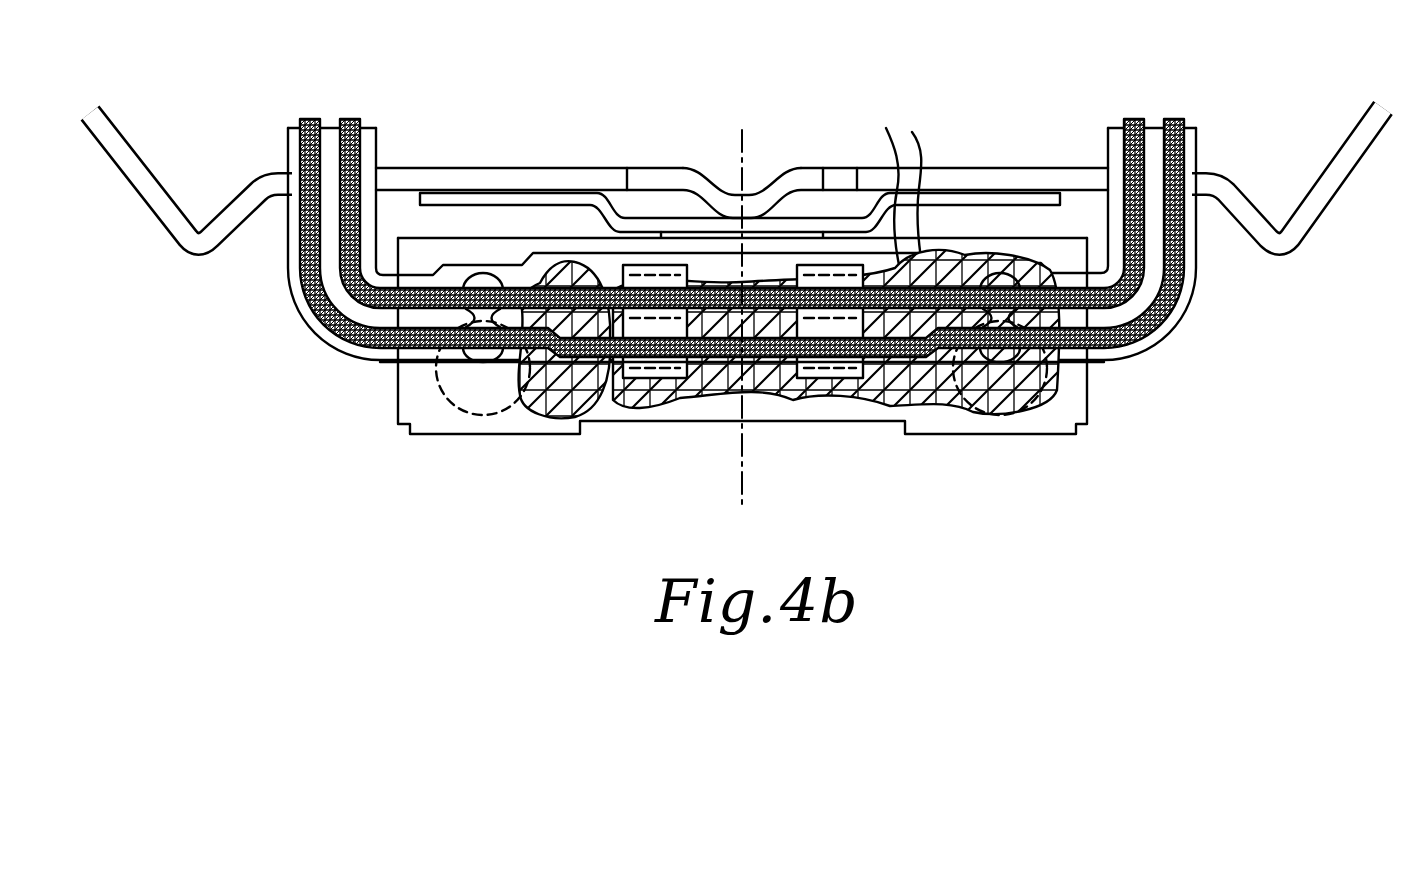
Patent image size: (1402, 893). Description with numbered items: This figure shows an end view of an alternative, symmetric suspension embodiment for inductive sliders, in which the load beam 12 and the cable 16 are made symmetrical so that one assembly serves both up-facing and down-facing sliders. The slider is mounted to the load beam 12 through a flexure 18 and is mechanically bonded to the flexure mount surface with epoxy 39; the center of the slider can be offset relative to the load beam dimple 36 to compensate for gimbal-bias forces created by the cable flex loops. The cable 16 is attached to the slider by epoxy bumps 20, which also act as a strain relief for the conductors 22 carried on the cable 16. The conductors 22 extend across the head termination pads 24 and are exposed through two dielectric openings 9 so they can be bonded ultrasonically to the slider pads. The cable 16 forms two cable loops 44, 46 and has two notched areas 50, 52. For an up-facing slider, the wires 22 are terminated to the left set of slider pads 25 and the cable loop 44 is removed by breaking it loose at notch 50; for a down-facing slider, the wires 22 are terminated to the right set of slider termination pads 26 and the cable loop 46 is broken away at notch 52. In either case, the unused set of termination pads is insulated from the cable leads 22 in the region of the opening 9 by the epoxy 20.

The opening 9 is at (815, 362).
The load beam 12 is at (1050, 167).
The cable 16 is at (335, 119).
The flexure 18 is at (550, 198).
The epoxy bumps 20 is at (553, 430).
The conductors 22 is at (298, 119).
The head termination pads 24 is at (620, 360).
The slider pads 25 is at (668, 365).
The slider termination pads 26 is at (886, 128).
The load beam dimple 36 is at (733, 183).
The epoxy 39 is at (826, 238).
The cable loop 44 is at (288, 143).
The cable loop 46 is at (1196, 133).
The notched area 50 is at (480, 410).
The notched area 52 is at (1012, 410).